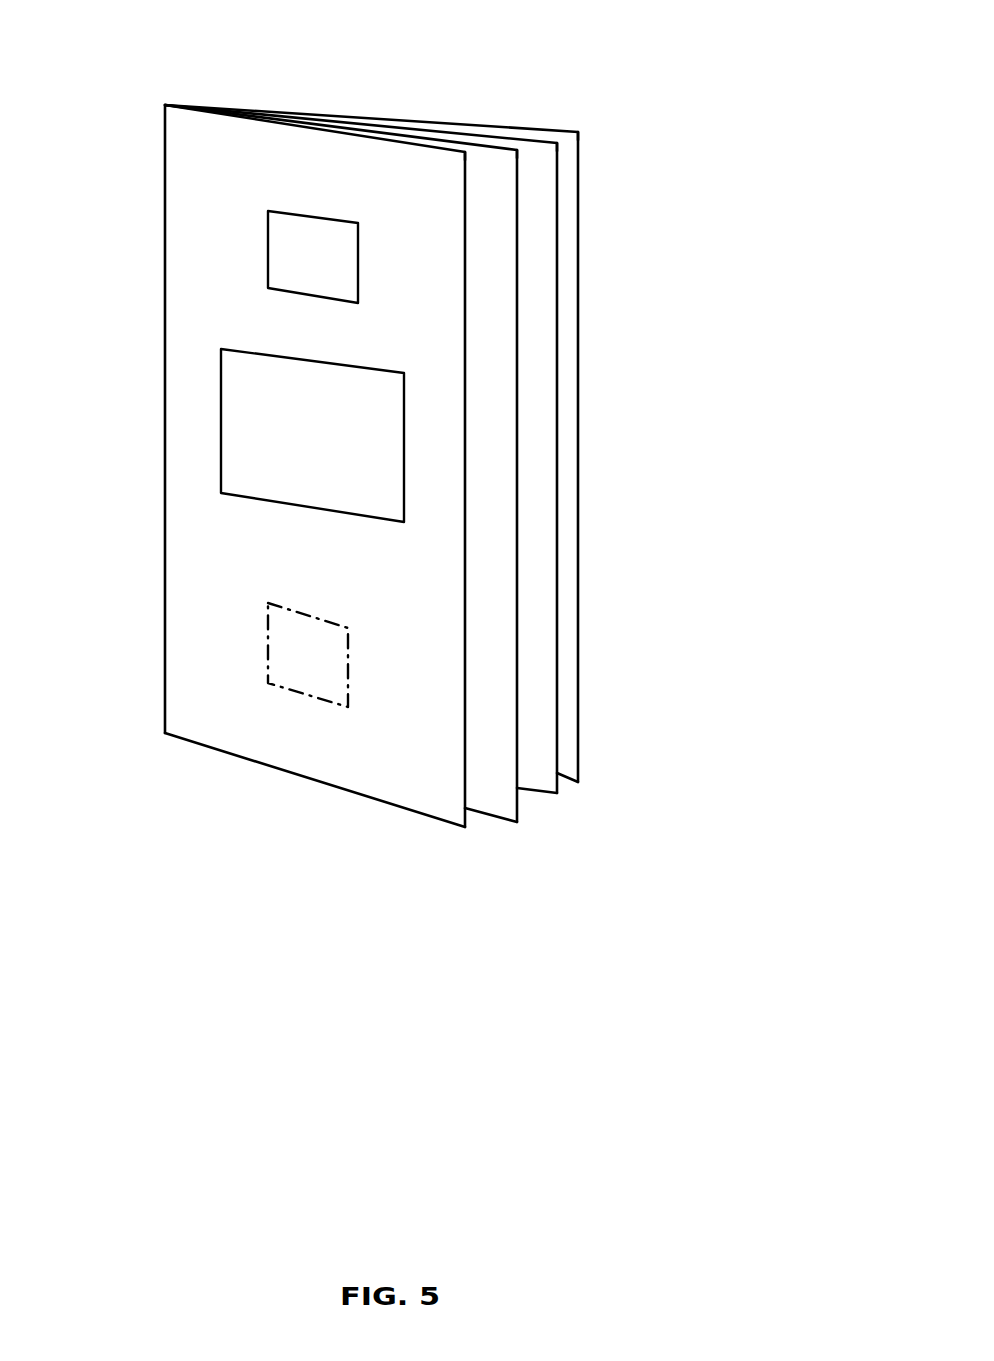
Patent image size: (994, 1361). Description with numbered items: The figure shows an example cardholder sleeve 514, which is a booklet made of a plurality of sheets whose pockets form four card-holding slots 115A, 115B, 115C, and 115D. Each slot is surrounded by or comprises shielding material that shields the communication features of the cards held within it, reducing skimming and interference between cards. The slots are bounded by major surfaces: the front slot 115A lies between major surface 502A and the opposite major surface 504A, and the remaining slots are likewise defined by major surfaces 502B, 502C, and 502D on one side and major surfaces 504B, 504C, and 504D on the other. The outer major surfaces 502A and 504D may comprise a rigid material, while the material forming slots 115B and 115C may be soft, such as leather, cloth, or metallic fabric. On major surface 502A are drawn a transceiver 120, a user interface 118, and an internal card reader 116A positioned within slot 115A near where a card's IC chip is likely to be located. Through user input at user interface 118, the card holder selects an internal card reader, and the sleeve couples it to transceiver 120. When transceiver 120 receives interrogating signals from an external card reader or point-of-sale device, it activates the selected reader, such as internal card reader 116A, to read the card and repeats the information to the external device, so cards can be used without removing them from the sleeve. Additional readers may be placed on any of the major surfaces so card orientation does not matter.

The cardholder sleeve 514 is at (694, 66).
The major surface 502A is at (182, 200).
The major surface 502B is at (490, 512).
The major surface 502C is at (540, 440).
The major surface 502D is at (568, 393).
The major surface 504A is at (477, 164).
The major surface 504B is at (524, 175).
The major surface 504C is at (572, 182).
The major surface 504D is at (590, 277).
The slot 115A is at (468, 822).
The slot 115B is at (518, 803).
The slot 115C is at (557, 765).
The slot 115D is at (580, 715).
The transceiver 120 is at (319, 214).
The user interface 118 is at (300, 357).
The internal card reader 116A is at (318, 621).